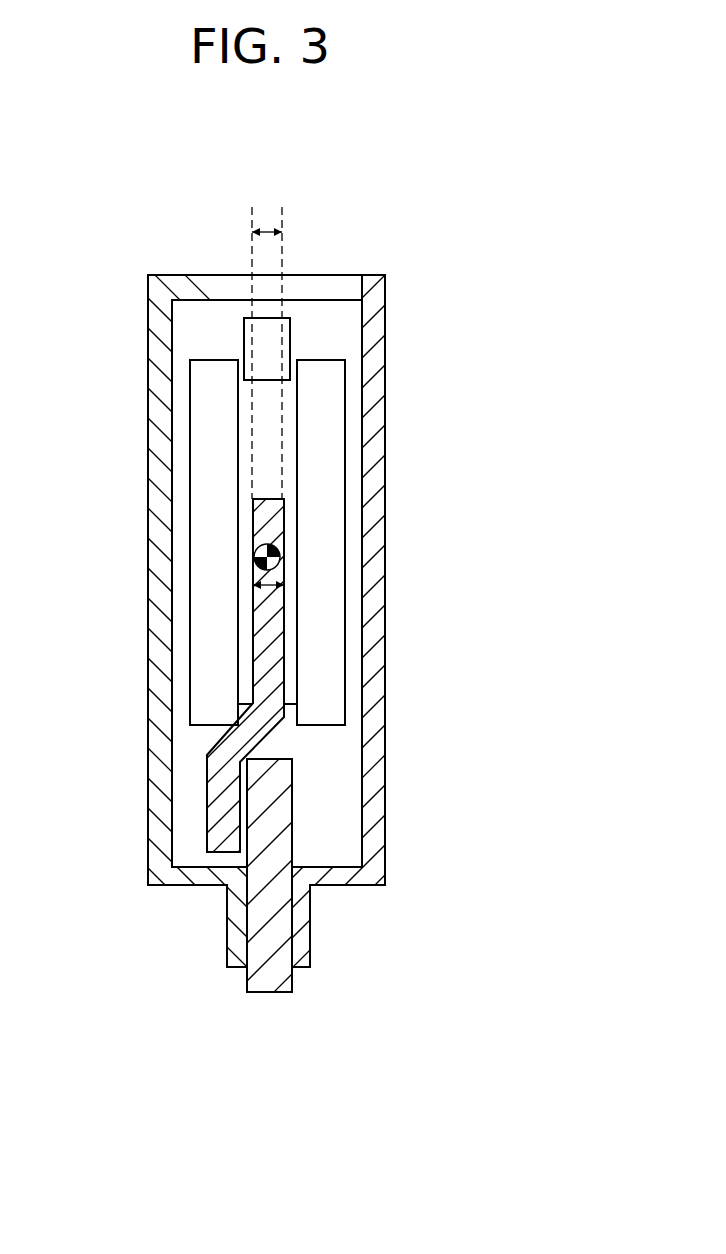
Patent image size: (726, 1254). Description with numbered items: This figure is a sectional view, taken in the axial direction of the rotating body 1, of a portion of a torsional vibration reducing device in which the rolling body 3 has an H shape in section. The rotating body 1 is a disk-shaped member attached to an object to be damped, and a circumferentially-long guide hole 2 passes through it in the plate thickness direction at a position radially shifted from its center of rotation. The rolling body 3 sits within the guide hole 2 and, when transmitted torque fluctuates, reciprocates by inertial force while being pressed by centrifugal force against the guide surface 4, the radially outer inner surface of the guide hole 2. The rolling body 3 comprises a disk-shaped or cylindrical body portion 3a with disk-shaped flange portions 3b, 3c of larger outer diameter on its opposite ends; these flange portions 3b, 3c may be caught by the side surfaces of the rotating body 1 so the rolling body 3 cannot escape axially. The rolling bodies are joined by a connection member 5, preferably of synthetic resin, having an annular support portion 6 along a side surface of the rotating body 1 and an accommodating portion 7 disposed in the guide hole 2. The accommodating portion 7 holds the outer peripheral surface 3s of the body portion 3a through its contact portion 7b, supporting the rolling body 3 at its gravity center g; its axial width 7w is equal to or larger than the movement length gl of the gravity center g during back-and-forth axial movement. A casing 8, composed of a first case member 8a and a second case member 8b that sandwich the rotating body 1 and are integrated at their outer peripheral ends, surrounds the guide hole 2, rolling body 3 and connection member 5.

The rotating body 1 is at (272, 993).
The guide hole 2 is at (280, 745).
The rolling body 3 is at (268, 484).
The body portion 3a is at (280, 418).
The flange portion 3b is at (208, 447).
The flange portion 3c is at (323, 445).
The outer peripheral surface 3s is at (290, 708).
The guide surface 4 is at (267, 382).
The connection member 5 is at (246, 652).
The support portion 6 is at (217, 781).
The accommodating portion 7 is at (246, 652).
The contact portion 7b is at (268, 512).
The width of the accommodating portion 7w is at (262, 229).
The casing 8 is at (275, 702).
The first case member 8a is at (343, 283).
The second case member 8b is at (345, 221).
The gravity center g is at (283, 543).
The movement length gl is at (268, 590).